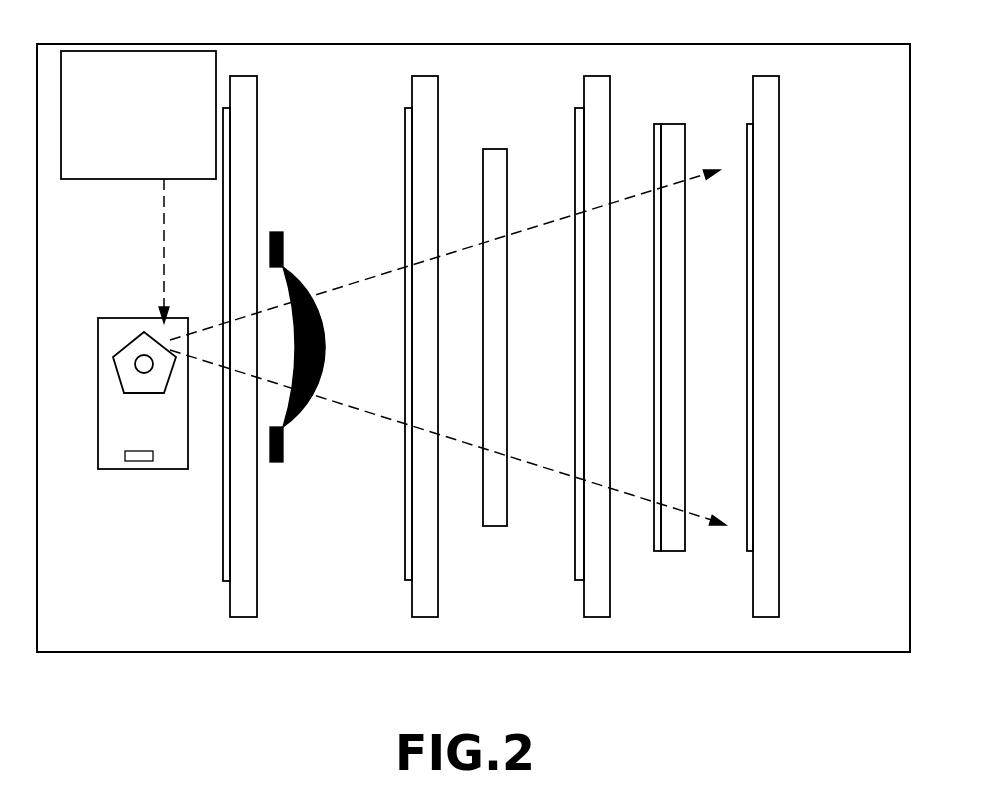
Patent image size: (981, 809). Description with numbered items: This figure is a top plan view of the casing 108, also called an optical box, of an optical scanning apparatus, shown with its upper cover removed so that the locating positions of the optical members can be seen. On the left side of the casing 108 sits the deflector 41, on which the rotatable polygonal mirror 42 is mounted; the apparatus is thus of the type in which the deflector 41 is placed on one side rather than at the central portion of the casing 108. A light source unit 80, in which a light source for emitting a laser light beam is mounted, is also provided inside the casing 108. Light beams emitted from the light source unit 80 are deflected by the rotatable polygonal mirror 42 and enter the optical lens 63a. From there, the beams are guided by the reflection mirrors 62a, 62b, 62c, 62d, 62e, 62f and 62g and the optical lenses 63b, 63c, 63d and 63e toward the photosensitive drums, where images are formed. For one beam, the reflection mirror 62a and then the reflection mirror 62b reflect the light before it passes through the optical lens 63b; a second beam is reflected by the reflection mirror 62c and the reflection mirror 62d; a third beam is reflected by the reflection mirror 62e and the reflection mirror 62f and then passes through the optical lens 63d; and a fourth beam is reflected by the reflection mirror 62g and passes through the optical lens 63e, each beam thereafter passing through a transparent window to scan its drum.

The casing 108 is at (337, 100).
The light source unit 80 is at (80, 65).
The deflector 41 is at (112, 432).
The rotatable polygonal mirror 42 is at (145, 348).
The reflection mirror 62a is at (498, 480).
The reflection mirror 62b is at (223, 547).
The reflection mirror 62c is at (658, 520).
The reflection mirror 62d is at (405, 532).
The reflection mirror 62e is at (678, 543).
The reflection mirror 62f is at (575, 562).
The reflection mirror 62g is at (747, 538).
The optical lens 63a is at (299, 275).
The optical lens 63b is at (243, 603).
The optical lens 63c is at (420, 597).
The optical lens 63d is at (597, 601).
The optical lens 63e is at (764, 598).